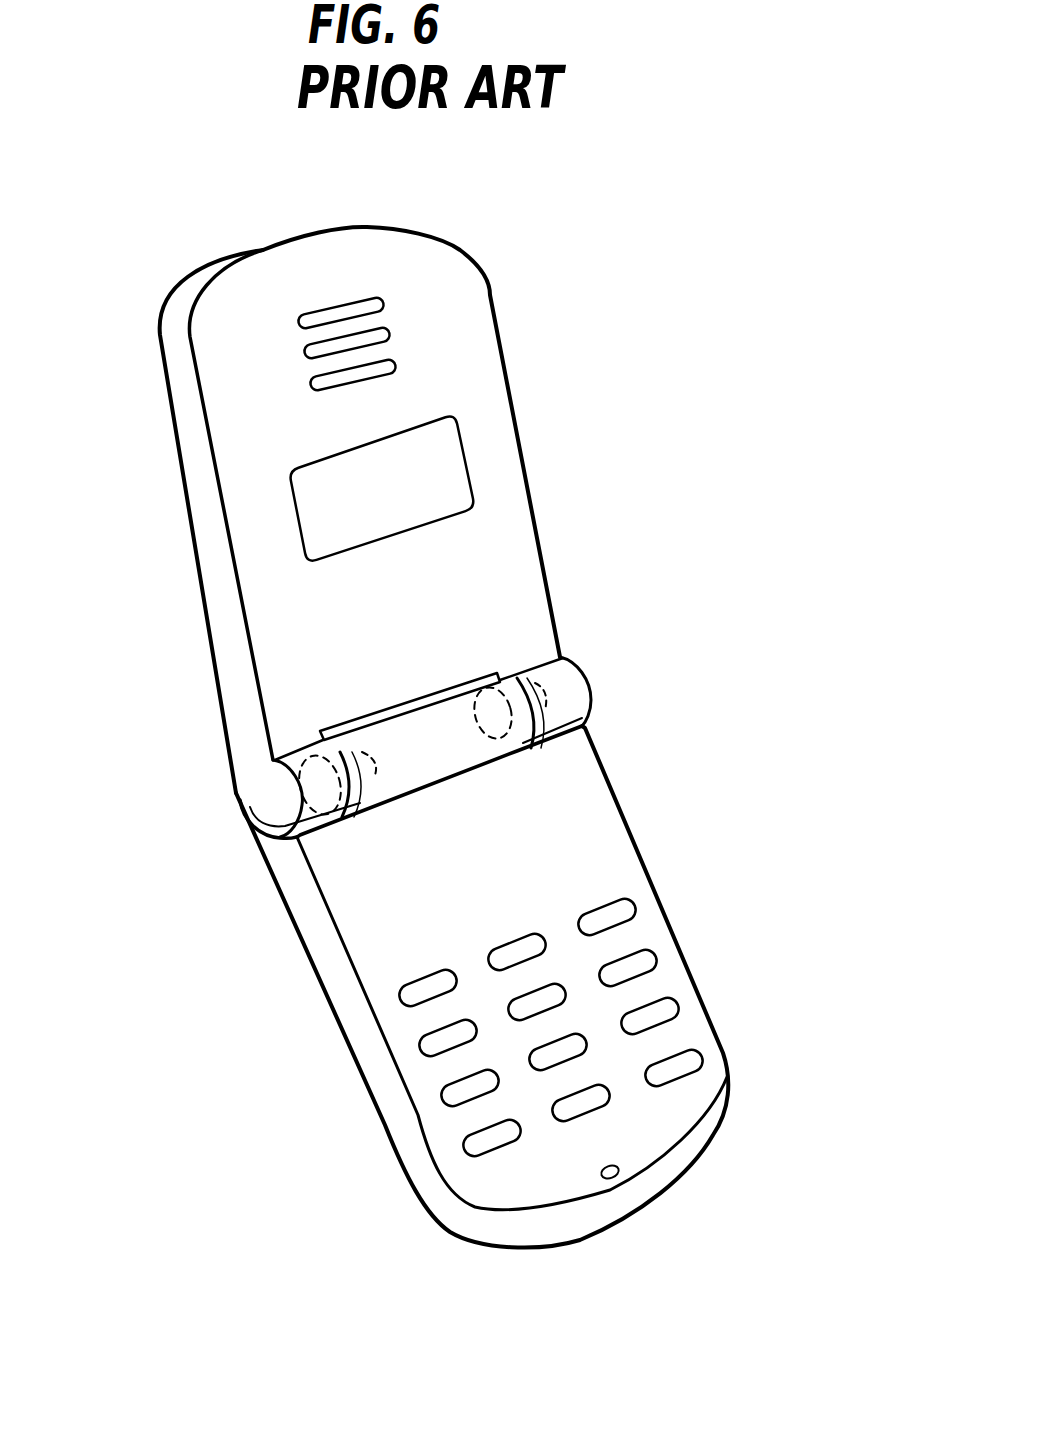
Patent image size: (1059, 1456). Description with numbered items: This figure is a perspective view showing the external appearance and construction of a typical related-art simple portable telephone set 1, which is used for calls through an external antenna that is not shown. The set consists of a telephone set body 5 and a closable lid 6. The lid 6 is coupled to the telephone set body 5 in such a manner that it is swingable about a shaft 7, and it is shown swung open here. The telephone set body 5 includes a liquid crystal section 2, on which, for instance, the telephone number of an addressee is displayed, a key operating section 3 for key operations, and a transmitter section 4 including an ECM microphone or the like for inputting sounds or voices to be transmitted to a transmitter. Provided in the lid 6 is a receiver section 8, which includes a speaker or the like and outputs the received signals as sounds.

The simple portable telephone set 1 is at (613, 557).
The liquid crystal section 2 is at (305, 513).
The key operating section 3 is at (410, 992).
The transmitter section 4 is at (621, 1170).
The telephone set body 5 is at (603, 846).
The closable lid 6 is at (502, 464).
The shaft 7 is at (548, 697).
The receiver section 8 is at (397, 360).